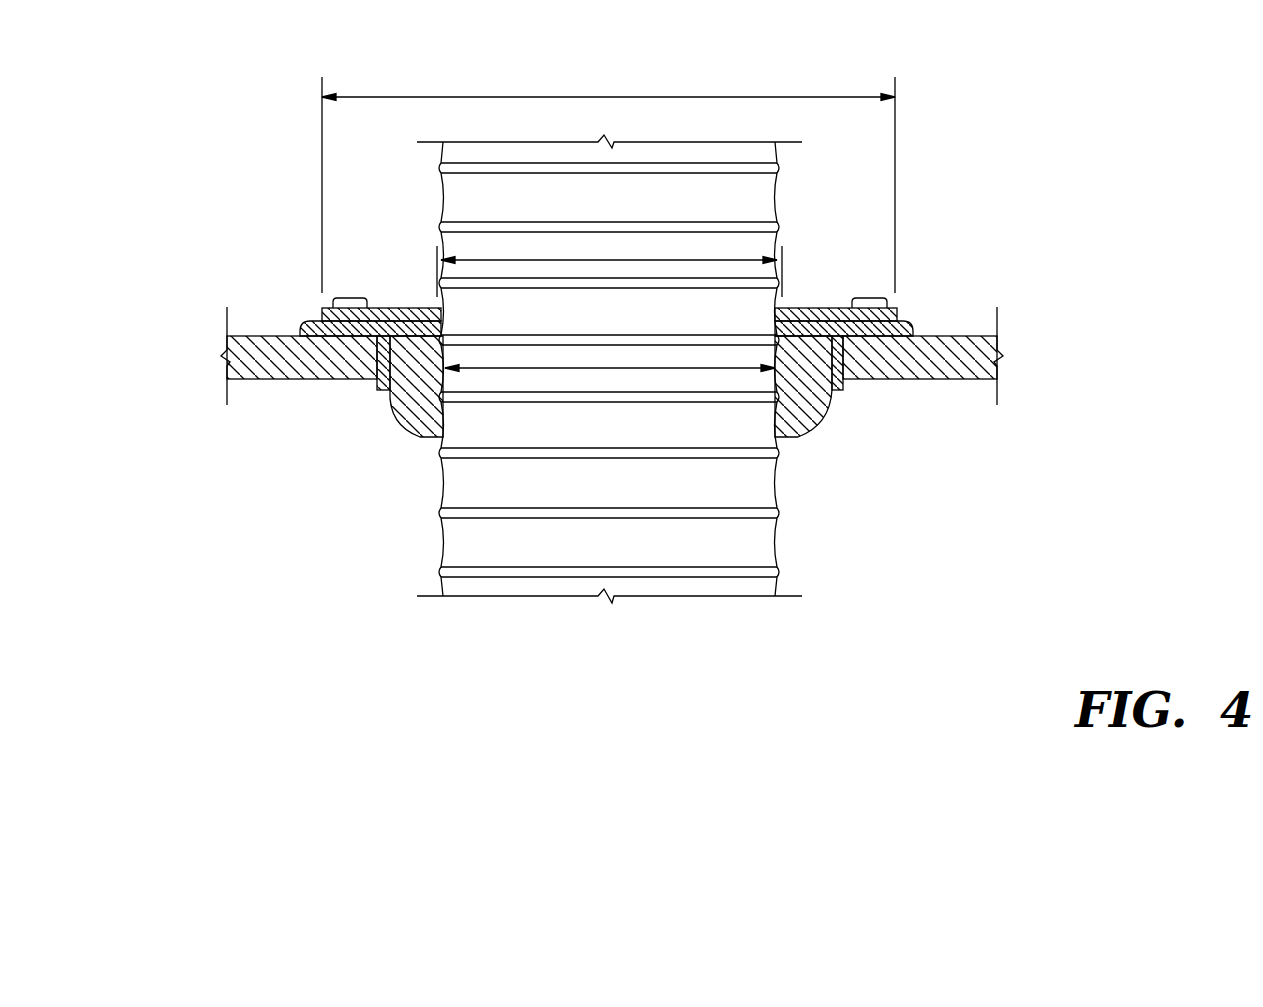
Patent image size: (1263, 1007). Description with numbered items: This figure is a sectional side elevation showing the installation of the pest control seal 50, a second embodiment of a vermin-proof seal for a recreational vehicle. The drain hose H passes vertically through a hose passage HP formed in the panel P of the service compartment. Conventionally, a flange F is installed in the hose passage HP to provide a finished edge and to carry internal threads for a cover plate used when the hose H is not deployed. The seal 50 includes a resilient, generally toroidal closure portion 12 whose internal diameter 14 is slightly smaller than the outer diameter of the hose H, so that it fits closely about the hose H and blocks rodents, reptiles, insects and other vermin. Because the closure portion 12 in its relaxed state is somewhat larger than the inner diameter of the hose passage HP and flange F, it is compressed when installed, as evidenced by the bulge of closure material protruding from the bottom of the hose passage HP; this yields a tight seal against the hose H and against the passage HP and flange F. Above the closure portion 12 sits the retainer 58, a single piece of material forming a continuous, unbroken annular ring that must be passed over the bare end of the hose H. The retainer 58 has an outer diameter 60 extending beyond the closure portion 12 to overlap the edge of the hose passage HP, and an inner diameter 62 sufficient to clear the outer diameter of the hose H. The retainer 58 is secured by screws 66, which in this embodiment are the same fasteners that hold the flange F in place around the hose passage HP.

The pest control seal 50 is at (250, 613).
The outer diameter 60 is at (787, 97).
The inner diameter 62 is at (735, 258).
The screws 66 is at (353, 298).
The retainer 58 is at (800, 307).
The internal diameter 14 is at (718, 368).
The closure portion 12 is at (410, 437).
The flange F is at (305, 325).
The panel P is at (297, 383).
The hose passage HP is at (382, 390).
The hose H is at (440, 512).